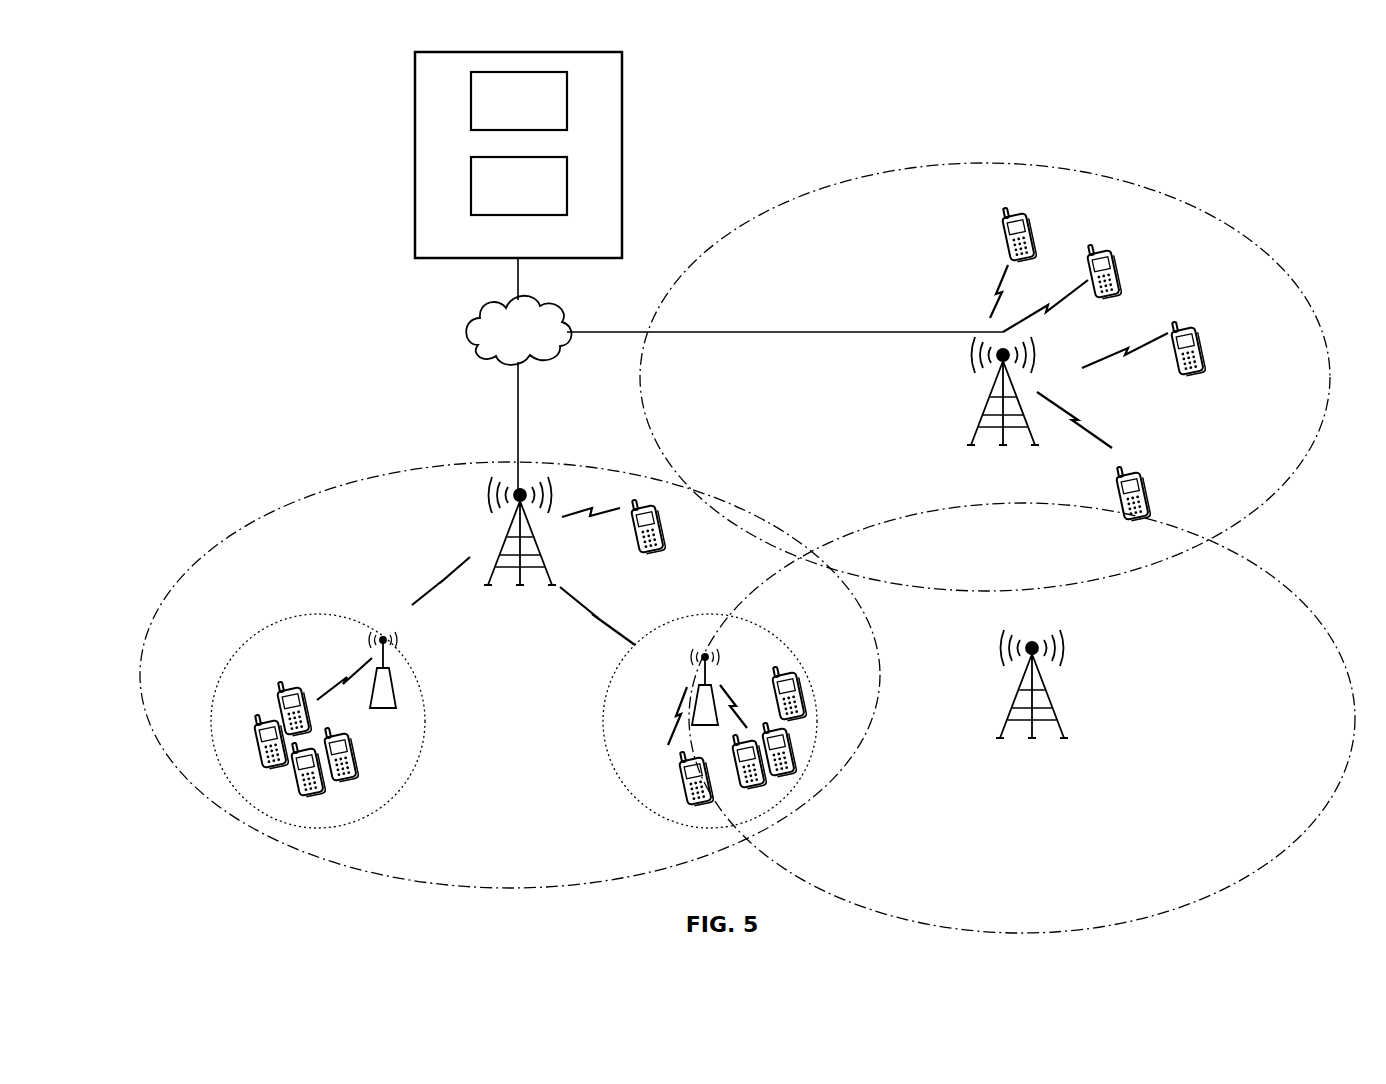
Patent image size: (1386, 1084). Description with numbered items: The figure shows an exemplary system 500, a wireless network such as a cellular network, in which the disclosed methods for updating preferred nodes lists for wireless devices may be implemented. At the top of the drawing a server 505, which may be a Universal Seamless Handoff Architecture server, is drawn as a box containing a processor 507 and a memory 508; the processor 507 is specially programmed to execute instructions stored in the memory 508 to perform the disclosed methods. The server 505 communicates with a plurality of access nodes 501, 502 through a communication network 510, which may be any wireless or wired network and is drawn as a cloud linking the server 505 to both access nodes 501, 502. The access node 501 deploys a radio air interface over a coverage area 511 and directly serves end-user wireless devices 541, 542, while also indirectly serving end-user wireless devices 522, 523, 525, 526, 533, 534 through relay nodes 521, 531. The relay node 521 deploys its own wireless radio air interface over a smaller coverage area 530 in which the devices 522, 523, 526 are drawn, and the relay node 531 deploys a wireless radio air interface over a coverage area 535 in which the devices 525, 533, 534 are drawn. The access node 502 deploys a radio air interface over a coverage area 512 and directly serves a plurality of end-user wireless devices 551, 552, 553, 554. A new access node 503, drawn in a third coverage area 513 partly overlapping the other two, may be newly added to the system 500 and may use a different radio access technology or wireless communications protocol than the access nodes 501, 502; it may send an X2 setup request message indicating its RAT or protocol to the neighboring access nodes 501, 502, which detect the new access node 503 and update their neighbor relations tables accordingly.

The system 500 is at (655, 178).
The access node 501 is at (505, 540).
The access node 502 is at (977, 430).
The new access node 503 is at (1055, 715).
The server 505 is at (492, 243).
The processor 507 is at (500, 111).
The memory 508 is at (500, 196).
The communication network 510 is at (500, 341).
The coverage area 511 is at (401, 870).
The coverage area 512 is at (1160, 560).
The third cell coverage area 513 is at (1226, 888).
The relay node 521 is at (395, 668).
The end-user wireless device 522 is at (283, 682).
The end-user wireless device 523 is at (258, 762).
The end-user wireless device 525 is at (690, 800).
The end-user wireless device 526 is at (305, 793).
The coverage area 530 is at (225, 668).
The relay node 531 is at (710, 673).
The end-user wireless device 533 is at (797, 755).
The end-user wireless device 534 is at (763, 787).
The coverage area 535 is at (817, 722).
The end-user wireless device 541 is at (662, 510).
The end-user wireless device 542 is at (787, 683).
The end-user wireless device 551 is at (1147, 497).
The end-user wireless device 552 is at (1203, 340).
The end-user wireless device 553 is at (1120, 268).
The end-user wireless device 554 is at (1035, 223).